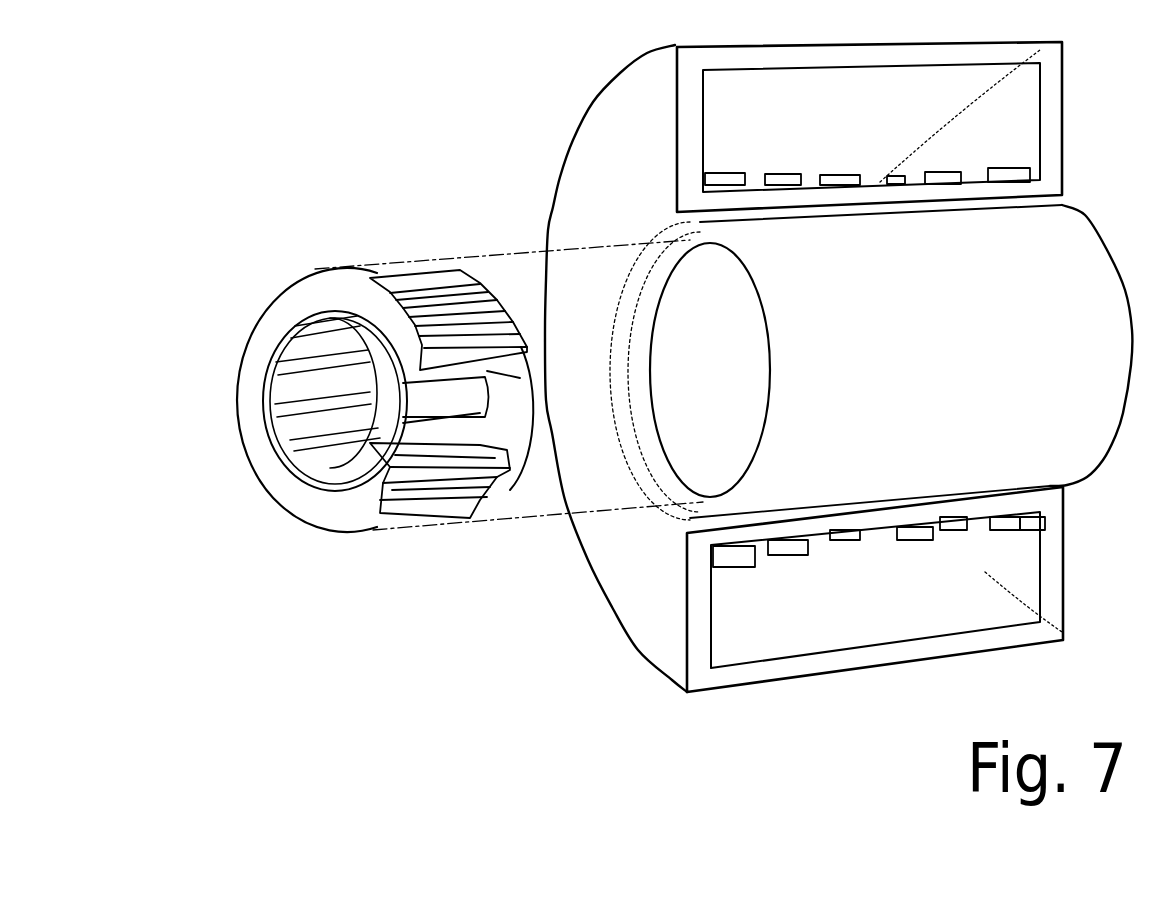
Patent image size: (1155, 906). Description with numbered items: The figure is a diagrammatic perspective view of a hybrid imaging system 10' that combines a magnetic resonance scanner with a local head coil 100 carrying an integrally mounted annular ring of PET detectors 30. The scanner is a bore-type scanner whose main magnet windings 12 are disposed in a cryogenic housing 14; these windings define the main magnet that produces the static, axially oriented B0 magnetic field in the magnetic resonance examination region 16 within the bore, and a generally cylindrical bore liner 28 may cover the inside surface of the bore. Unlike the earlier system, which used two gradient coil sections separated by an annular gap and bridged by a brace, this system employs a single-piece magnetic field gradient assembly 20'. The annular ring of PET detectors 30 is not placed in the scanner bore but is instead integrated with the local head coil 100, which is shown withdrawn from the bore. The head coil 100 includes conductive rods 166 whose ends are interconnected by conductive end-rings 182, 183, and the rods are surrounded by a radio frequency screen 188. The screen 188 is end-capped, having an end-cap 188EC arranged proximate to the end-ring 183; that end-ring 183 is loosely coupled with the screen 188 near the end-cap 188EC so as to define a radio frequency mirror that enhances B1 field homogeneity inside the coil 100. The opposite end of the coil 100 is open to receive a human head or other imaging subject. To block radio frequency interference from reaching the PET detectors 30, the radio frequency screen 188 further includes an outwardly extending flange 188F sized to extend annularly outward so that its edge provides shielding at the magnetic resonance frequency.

The imaging system 10' is at (718, 346).
The local head coil 100 is at (281, 160).
The cryogenic housing 14 is at (580, 207).
The main magnet windings 12 is at (848, 173).
The bore liner 28 is at (697, 275).
The magnetic resonance examination region 16 is at (746, 364).
The single-piece magnetic field gradient assembly 20' is at (911, 361).
The annular ring of PET detectors 30 is at (437, 316).
The conductive end-ring 183 is at (297, 322).
The conductive end-ring 182 is at (280, 352).
The outwardly extending flange 188F is at (303, 293).
The conductive rods 166 is at (393, 400).
The end-cap 188EC is at (318, 477).
The radio frequency screen 188 is at (528, 462).